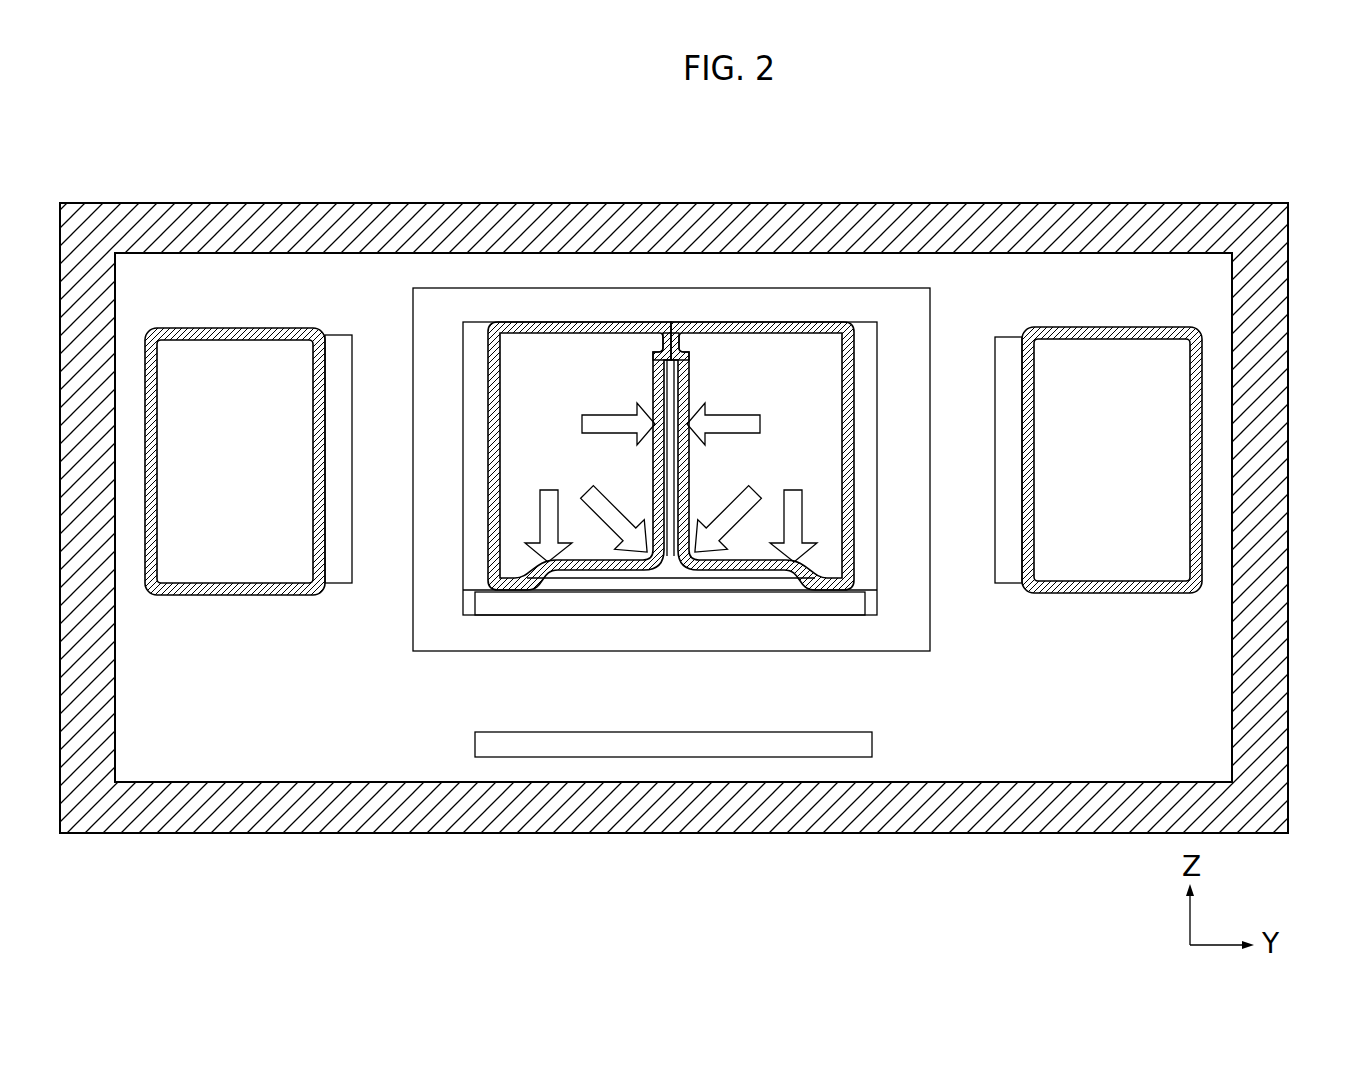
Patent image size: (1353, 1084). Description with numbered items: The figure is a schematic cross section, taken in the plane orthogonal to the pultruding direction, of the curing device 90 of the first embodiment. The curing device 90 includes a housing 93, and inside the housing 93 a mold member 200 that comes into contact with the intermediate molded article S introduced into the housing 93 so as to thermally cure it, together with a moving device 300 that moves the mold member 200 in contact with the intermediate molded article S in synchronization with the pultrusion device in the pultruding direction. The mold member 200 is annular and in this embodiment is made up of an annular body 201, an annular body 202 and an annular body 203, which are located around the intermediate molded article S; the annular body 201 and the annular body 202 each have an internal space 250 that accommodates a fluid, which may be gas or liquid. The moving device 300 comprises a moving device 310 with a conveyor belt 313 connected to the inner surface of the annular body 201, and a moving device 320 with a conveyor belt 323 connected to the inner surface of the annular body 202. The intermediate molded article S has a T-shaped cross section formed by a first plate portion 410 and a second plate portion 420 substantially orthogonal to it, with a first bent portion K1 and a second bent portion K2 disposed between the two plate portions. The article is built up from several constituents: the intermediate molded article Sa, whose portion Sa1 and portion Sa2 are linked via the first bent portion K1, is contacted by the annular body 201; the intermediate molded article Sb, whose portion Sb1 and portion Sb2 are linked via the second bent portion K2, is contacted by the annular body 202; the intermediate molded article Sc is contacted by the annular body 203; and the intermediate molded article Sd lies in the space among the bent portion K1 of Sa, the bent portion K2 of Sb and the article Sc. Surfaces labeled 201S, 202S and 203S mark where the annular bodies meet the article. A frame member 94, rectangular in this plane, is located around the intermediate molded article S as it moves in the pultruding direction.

The curing device 90 is at (703, 470).
The housing 93 is at (1262, 510).
The frame member 94 is at (897, 360).
The mold member 200 is at (582, 322).
The annular body 201 is at (1108, 327).
The annular body 202 is at (237, 328).
The annular body 203 is at (872, 744).
The internal space 250 is at (257, 476).
The moving device 300 is at (673, 384).
The moving device 310 is at (1034, 384).
The moving device 320 is at (311, 384).
The conveyor belt 313 is at (866, 452).
The conveyor belt 323 is at (478, 452).
The first plate portion 410 is at (650, 364).
The second plate portion 420 is at (641, 594).
The intermediate molded article S is at (694, 364).
The intermediate molded article Sa is at (686, 378).
The portion Sa1 is at (686, 402).
The portion Sa2 is at (748, 562).
The intermediate molded article Sb is at (656, 378).
The portion Sb1 is at (656, 402).
The portion Sb2 is at (566, 576).
The intermediate molded article Sc is at (725, 580).
The intermediate molded article Sd is at (678, 578).
The first cooler surface 201S is at (692, 452).
The second cooler surface 202S is at (650, 452).
The third cooler surface 203S is at (598, 588).
The first bent portion K1 is at (697, 555).
The second bent portion K2 is at (645, 555).